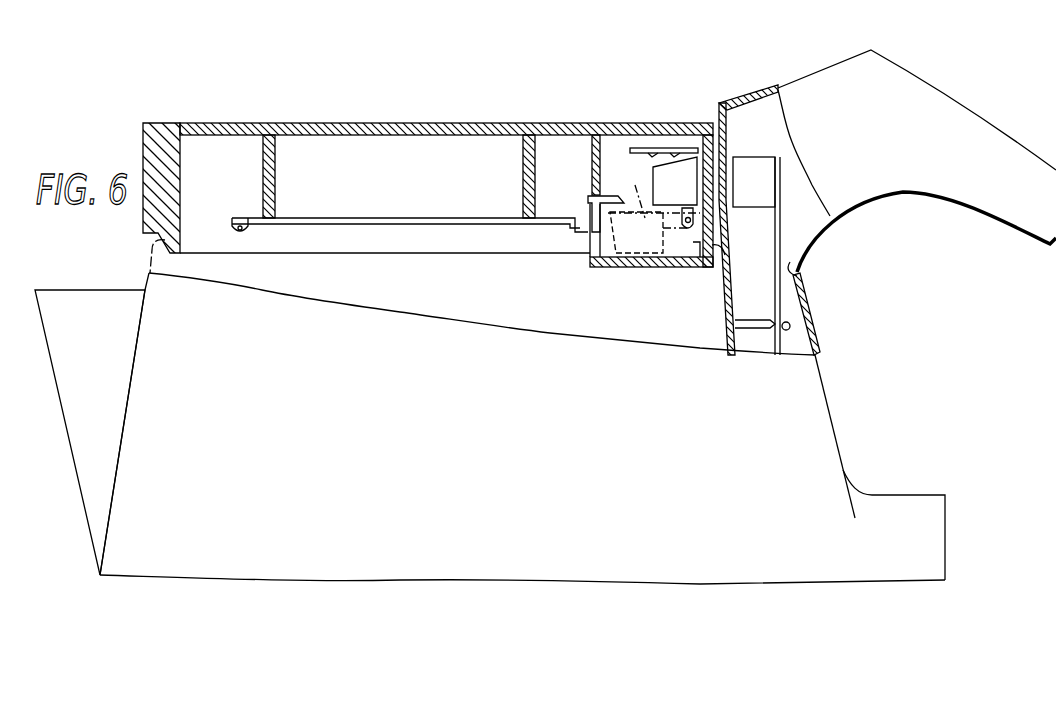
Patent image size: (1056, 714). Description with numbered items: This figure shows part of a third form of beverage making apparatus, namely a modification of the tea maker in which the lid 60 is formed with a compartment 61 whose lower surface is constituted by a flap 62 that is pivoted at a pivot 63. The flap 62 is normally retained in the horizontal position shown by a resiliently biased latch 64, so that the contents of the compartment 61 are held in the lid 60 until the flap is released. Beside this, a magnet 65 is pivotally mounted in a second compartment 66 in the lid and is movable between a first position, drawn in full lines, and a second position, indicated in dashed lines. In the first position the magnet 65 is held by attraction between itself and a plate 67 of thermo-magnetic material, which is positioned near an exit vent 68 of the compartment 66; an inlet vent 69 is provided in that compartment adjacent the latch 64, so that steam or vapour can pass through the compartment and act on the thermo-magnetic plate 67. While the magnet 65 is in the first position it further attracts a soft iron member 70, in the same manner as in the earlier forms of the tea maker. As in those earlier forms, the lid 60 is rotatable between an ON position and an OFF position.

The lid 60 is at (392, 126).
The compartment 61 is at (406, 195).
The flap 62 is at (408, 223).
The pivot 63 is at (233, 225).
The resiliently biased latch 64 is at (588, 197).
The magnet 65 is at (661, 181).
The compartment 66 is at (612, 146).
The plate of thermo-magnetic material 67 is at (675, 150).
The exit vent 68 is at (658, 146).
The inlet vent 69 is at (592, 251).
The soft iron member 70 is at (752, 161).